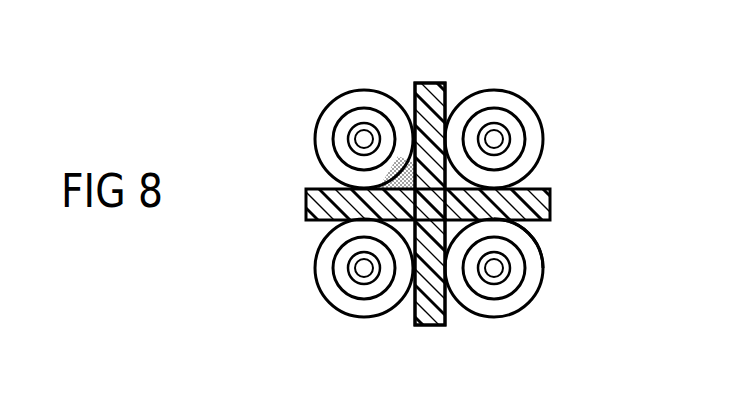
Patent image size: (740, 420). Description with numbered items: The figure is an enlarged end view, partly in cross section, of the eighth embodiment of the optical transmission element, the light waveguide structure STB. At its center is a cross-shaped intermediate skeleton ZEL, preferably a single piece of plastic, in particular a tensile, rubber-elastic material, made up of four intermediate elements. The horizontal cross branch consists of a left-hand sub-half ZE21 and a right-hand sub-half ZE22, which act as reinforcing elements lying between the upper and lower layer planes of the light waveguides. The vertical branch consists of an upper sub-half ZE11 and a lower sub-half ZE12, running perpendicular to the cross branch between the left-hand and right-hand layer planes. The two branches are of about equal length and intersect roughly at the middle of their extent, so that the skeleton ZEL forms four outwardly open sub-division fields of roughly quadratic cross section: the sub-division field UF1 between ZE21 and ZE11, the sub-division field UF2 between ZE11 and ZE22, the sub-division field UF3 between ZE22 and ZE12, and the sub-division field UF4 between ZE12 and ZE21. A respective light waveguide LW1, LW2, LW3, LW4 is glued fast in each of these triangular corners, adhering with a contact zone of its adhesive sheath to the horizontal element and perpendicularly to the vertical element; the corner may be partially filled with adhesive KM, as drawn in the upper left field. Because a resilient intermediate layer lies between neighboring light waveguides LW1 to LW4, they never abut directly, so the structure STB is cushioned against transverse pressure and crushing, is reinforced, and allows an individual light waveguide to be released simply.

The light waveguide LW1 is at (339, 125).
The light waveguide LW2 is at (522, 125).
The light waveguide LW3 is at (515, 287).
The light waveguide LW4 is at (347, 292).
The sub-division field UF1 is at (320, 186).
The sub-division field UF2 is at (450, 107).
The sub-division field UF3 is at (452, 303).
The sub-division field UF4 is at (330, 223).
The intermediate element ZE11 is at (430, 83).
The intermediate element ZE12 is at (430, 318).
The intermediate element ZE21 is at (306, 203).
The intermediate element ZE22 is at (545, 188).
The cross-shaped intermediate skeleton ZEL is at (382, 204).
The adhesive KM is at (394, 158).
The optical transmission element structure (eighth embodiment) STB is at (572, 261).